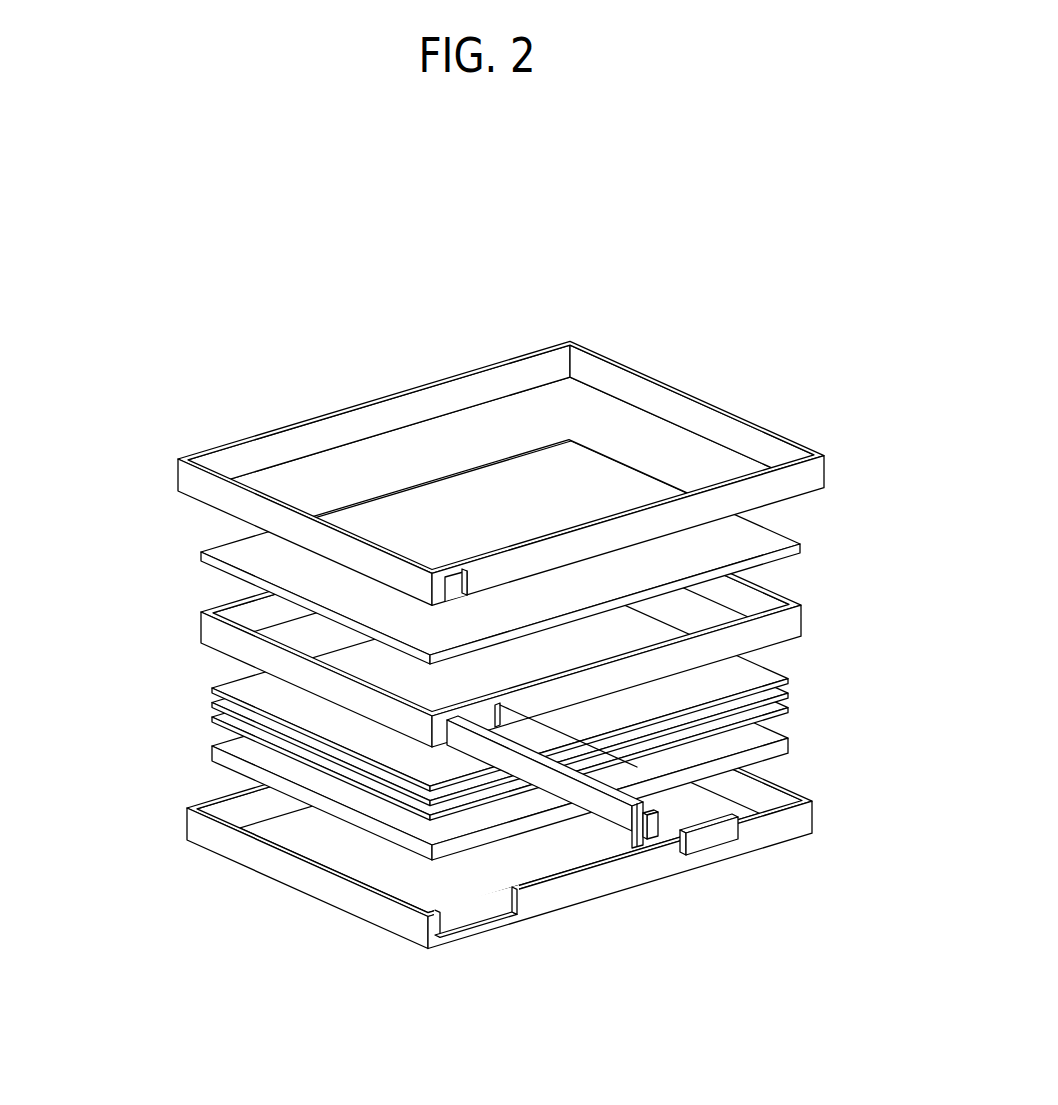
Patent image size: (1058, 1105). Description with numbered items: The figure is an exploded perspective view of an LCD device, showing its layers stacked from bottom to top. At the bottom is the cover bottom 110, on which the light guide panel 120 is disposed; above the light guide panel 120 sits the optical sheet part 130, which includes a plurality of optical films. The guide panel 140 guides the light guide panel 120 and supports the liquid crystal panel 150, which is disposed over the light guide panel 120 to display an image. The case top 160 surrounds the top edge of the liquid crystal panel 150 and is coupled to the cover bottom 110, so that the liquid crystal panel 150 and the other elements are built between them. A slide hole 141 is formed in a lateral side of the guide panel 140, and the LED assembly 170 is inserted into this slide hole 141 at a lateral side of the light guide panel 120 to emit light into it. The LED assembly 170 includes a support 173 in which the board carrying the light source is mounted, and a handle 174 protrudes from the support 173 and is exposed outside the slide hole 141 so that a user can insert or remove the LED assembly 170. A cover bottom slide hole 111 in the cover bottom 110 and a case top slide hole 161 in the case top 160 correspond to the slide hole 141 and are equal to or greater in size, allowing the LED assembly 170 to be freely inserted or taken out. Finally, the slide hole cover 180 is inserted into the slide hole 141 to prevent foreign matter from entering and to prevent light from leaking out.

The cover bottom 110 is at (443, 848).
The cover bottom slide hole 111 is at (522, 903).
The light guide panel 120 is at (212, 752).
The optical sheet part 130 is at (201, 687).
The guide panel 140 is at (492, 666).
The slide hole 141 is at (505, 722).
The liquid crystal panel 150 is at (201, 556).
The case top 160 is at (492, 473).
The case top slide hole 161 is at (475, 573).
The LED assembly 170 is at (640, 920).
The support 173 is at (617, 812).
The handle 174 is at (638, 842).
The slide hole cover 180 is at (708, 838).